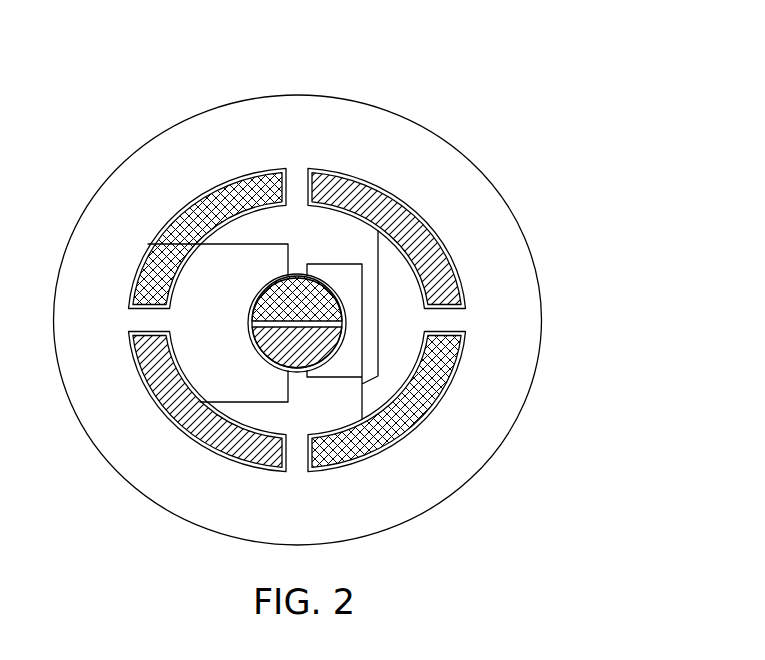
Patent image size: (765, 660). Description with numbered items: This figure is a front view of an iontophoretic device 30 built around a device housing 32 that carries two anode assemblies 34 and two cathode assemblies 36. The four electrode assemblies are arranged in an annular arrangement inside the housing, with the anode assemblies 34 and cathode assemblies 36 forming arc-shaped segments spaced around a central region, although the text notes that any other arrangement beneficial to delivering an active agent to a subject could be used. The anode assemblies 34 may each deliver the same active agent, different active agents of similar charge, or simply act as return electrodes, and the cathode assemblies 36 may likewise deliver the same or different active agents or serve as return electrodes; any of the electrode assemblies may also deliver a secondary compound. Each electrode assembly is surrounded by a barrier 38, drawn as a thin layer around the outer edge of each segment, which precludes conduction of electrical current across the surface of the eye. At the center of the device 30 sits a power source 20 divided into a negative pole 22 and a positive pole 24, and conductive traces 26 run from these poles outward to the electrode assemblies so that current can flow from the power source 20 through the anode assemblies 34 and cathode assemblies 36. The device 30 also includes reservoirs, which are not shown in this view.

The power source 20 is at (249, 323).
The negative pole 22 is at (254, 300).
The positive pole 24 is at (263, 360).
The conductive traces 26 is at (250, 243).
The iontophoretic device 30 is at (409, 81).
The device housing 32 is at (540, 320).
The anode assemblies 34 is at (427, 415).
The cathode assemblies 36 is at (446, 251).
The barrier 38 is at (408, 203).